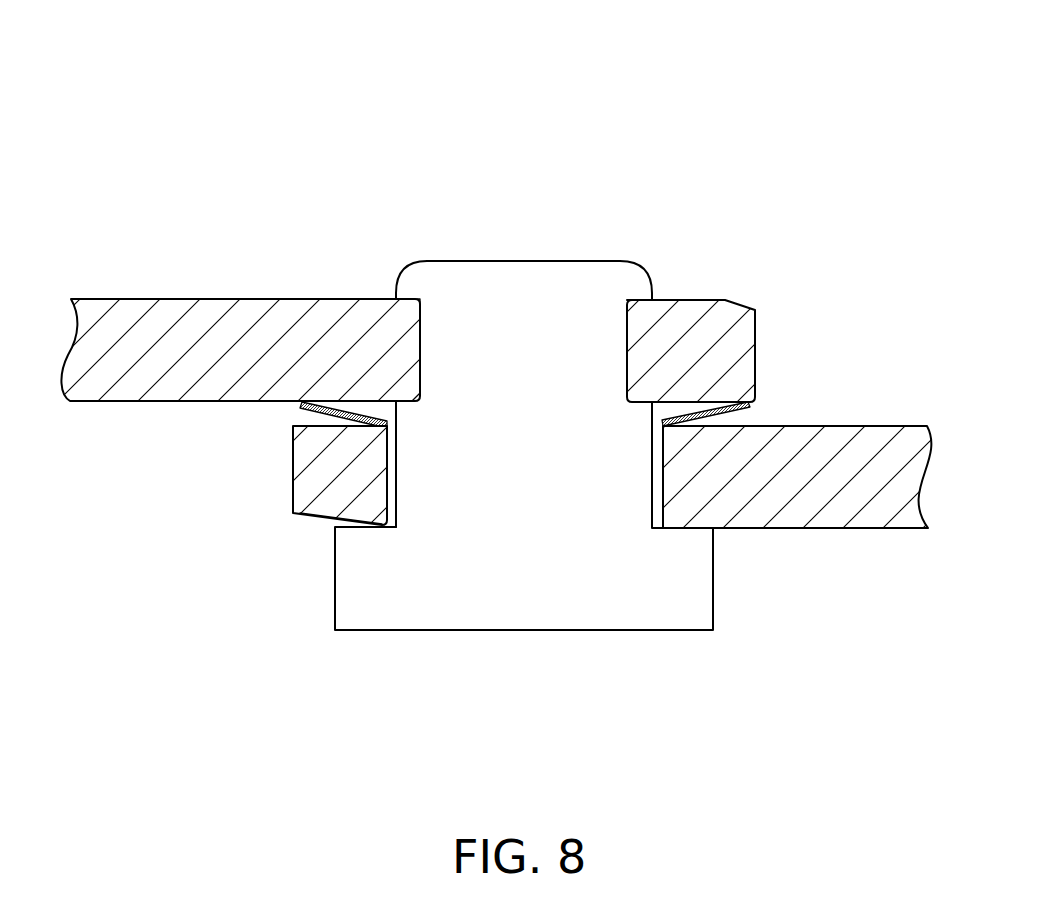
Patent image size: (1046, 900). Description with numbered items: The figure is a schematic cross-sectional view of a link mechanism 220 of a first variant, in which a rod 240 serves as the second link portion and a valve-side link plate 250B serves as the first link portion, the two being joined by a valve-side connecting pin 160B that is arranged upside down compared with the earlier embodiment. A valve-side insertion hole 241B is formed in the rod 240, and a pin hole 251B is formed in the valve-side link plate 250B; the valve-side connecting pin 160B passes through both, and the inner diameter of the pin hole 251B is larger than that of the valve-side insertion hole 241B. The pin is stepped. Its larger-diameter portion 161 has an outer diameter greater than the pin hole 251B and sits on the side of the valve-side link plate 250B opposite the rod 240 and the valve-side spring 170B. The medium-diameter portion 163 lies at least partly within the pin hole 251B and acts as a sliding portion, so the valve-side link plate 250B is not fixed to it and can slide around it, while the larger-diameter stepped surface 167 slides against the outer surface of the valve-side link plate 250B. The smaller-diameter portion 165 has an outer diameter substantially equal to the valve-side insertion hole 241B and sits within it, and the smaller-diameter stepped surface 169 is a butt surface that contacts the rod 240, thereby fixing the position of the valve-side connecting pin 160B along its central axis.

The link mechanism 220 is at (262, 83).
The rod 240 is at (153, 298).
The valve-side link plate 250B is at (876, 426).
The valve-side connecting pin 160B is at (522, 261).
The larger-diameter portion 161 is at (335, 595).
The medium-diameter portion 163 is at (395, 472).
The smaller-diameter portion 165 is at (417, 347).
The larger-diameter stepped surface 167 is at (362, 511).
The smaller-diameter stepped surface 169 is at (410, 397).
The valve-side spring 170B is at (328, 415).
The valve-side insertion hole 241B is at (423, 384).
The pin hole 251B is at (400, 507).